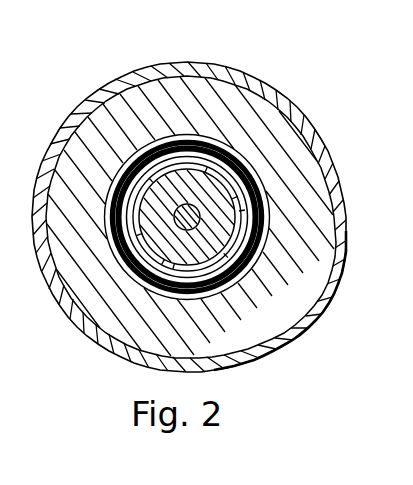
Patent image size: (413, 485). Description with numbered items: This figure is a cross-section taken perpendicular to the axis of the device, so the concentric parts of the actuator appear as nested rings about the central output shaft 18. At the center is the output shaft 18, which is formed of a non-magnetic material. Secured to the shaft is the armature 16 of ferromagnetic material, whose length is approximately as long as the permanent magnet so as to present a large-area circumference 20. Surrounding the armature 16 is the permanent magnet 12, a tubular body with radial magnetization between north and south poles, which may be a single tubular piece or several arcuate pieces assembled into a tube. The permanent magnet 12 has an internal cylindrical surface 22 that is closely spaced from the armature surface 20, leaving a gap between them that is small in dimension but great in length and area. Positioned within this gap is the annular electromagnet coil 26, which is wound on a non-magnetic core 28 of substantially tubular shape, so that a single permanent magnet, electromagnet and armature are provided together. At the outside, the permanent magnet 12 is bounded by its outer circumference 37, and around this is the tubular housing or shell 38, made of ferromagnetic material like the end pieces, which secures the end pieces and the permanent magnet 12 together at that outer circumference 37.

The permanent magnet 12 is at (318, 144).
The armature 16 is at (227, 225).
The output shaft 18 is at (196, 230).
The armature surface 20 is at (166, 268).
The internal cylindrical surface 22 is at (149, 268).
The electromagnet coil 26 is at (118, 232).
The non-magnetic core 28 is at (205, 155).
The outer circumference 37 is at (232, 71).
The tubular housing or shell 38 is at (281, 105).